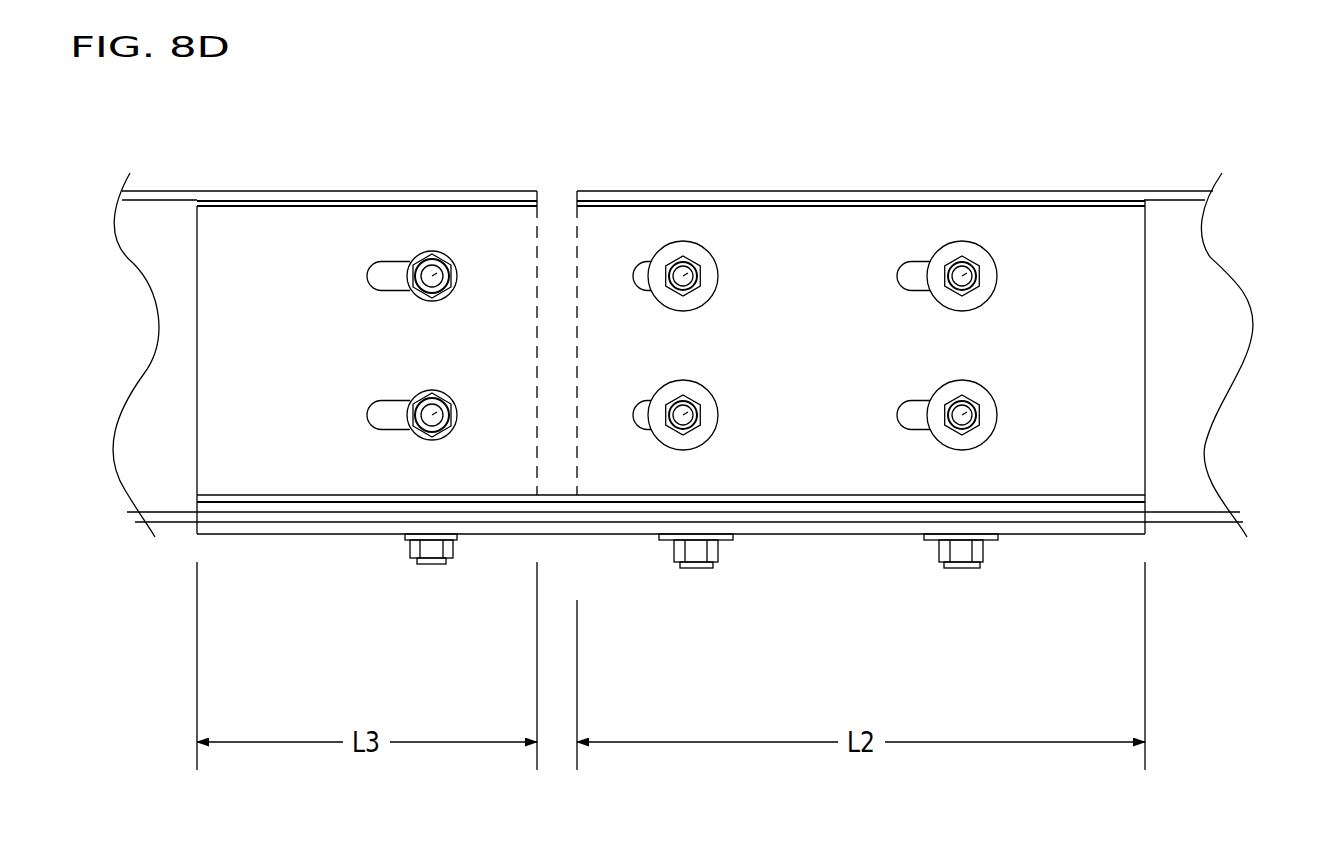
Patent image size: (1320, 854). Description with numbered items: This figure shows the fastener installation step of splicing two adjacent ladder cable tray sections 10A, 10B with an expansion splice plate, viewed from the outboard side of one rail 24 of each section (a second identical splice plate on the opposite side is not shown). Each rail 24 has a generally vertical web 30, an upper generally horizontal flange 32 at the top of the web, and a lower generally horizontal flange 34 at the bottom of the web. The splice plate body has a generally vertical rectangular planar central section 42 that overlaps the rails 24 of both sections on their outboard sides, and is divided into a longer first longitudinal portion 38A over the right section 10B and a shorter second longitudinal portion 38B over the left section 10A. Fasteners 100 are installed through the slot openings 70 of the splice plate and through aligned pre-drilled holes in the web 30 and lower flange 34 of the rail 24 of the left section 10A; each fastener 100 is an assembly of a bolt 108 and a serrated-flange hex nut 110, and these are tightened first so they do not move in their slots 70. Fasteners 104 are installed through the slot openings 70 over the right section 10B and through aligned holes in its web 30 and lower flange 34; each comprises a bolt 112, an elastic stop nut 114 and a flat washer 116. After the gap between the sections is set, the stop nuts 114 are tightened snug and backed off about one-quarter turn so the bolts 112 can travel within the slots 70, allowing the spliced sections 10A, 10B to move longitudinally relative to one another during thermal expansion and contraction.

The cable tray section 10A is at (172, 190).
The cable tray section 10B is at (893, 186).
The rail 24 is at (180, 308).
The web 30 is at (153, 243).
The upper flange 32 is at (440, 190).
The lower flange 34 is at (168, 522).
The first longitudinal portion 38A is at (1118, 257).
The second longitudinal portion 38B is at (247, 250).
The central section 42 is at (1120, 397).
The slot opening 70 is at (367, 284).
The fastener 100 is at (420, 308).
The fastener 104 is at (720, 243).
The bolt 108 is at (415, 262).
The serrated-flange hex nut 110 is at (442, 300).
The bolt 112 is at (683, 279).
The elastic stop nut 114 is at (705, 303).
The flat washer 116 is at (692, 296).